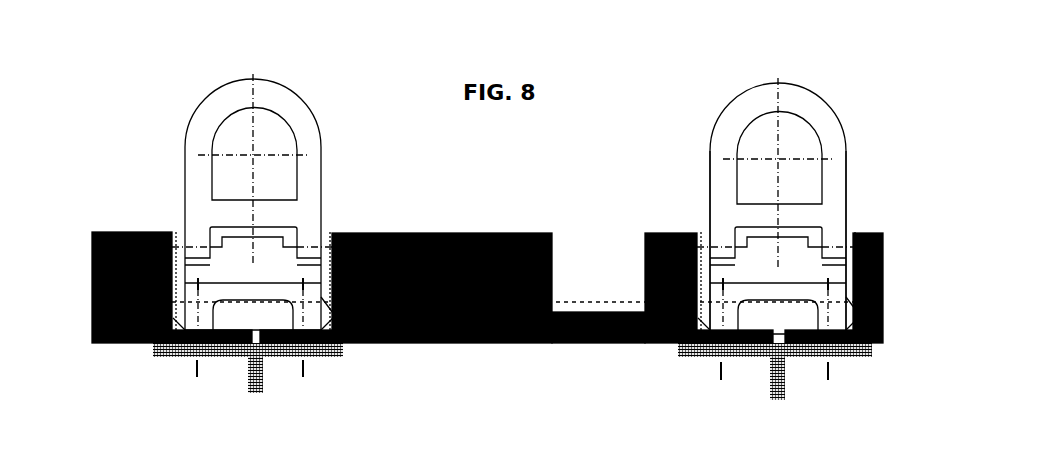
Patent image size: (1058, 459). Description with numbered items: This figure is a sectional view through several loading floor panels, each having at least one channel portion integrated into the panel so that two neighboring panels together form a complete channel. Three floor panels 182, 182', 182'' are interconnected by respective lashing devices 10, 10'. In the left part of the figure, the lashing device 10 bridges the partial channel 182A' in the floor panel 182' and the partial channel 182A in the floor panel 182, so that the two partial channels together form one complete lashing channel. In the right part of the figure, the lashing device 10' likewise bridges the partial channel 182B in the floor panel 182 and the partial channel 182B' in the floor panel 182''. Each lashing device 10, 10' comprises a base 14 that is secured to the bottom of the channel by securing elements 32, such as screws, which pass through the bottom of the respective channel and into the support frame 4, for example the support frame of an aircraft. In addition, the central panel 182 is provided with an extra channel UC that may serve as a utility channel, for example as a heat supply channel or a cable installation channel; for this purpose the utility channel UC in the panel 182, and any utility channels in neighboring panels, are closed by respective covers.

The lashing device 10 is at (234, 173).
The lashing device 10' is at (807, 189).
The floor panel 182' is at (113, 235).
The partial channel 182A' is at (148, 235).
The partial channel 182A is at (374, 240).
The floor panel 182 is at (488, 244).
The utility channel UC is at (598, 237).
The partial channel 182B is at (651, 255).
The floor panel 182'' is at (893, 243).
The securing element 32 is at (303, 373).
The base 14 is at (362, 343).
The support frame 4 is at (757, 389).
The partial channel 182B' is at (787, 330).